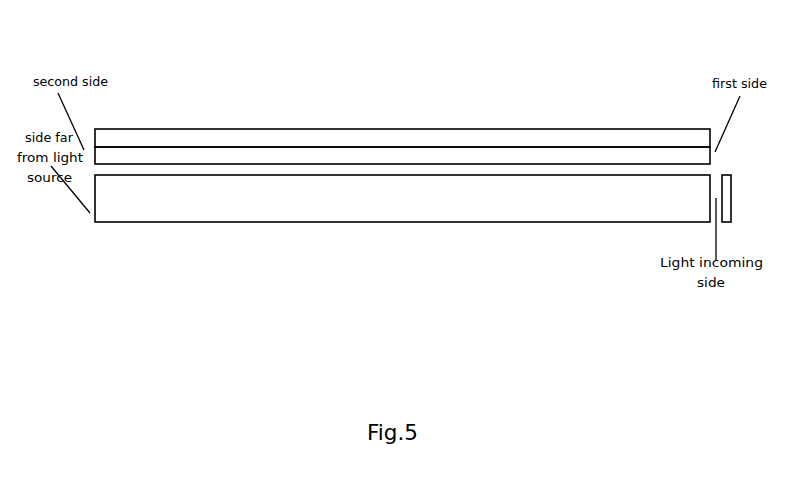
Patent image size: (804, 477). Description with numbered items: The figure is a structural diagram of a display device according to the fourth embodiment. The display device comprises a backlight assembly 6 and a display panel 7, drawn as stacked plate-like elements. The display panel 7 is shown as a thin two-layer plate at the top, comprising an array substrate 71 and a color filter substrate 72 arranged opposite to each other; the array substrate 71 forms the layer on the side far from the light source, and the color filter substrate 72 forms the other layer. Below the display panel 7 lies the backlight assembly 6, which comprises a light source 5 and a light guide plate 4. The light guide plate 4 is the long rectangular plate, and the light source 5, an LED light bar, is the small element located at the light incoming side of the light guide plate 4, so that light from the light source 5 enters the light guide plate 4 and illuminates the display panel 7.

The light guide plate 4 is at (625, 199).
The light source 5 is at (727, 200).
The backlight assembly 6 is at (427, 259).
The display panel 7 is at (402, 94).
The array substrate 71 is at (397, 63).
The color filter substrate 72 is at (412, 142).